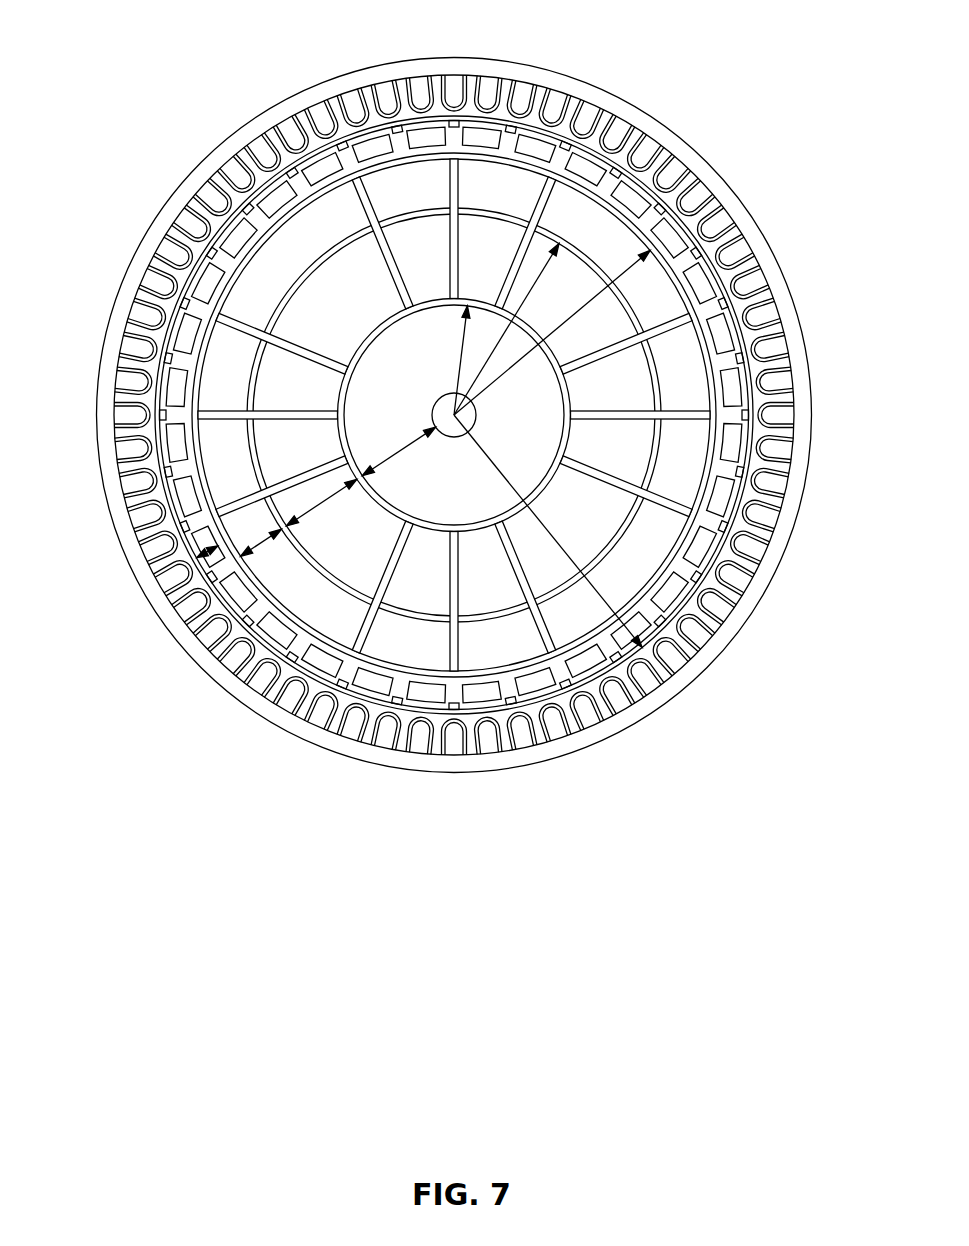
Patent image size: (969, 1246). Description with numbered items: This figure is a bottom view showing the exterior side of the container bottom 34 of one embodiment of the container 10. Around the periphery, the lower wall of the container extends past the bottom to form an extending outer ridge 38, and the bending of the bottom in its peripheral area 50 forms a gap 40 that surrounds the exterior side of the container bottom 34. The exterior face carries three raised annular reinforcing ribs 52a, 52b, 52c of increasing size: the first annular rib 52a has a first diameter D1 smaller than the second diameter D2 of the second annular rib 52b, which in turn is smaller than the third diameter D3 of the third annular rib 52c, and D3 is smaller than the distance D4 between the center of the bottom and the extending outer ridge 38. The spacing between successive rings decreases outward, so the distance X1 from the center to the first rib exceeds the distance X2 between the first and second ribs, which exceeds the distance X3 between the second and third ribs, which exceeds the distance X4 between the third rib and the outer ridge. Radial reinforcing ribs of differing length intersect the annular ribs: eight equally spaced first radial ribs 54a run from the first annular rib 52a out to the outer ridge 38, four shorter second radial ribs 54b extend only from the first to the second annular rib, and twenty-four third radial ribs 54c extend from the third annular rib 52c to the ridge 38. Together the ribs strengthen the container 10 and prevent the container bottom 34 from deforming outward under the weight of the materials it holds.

The container 10 is at (148, 70).
The container bottom 34 is at (634, 192).
The extending outer ridge 38 is at (132, 328).
The gap 40 is at (330, 672).
The peripheral area 50 is at (738, 438).
The first annular reinforcing rib 52a is at (525, 490).
The second annular reinforcing rib 52b is at (305, 741).
The third annular reinforcing rib 52c is at (185, 372).
The first radial reinforcing ribs 54a is at (684, 308).
The second radial reinforcing ribs 54b is at (460, 588).
The third radial reinforcing ribs 54c is at (731, 352).
The first diameter D1 is at (462, 340).
The second diameter D2 is at (538, 275).
The third diameter D3 is at (477, 390).
The distance between the extending outer ridge and the center D4 is at (598, 585).
The distance between the center and the first annular rib X1 is at (392, 456).
The distance between the first and second annular ribs X2 is at (317, 509).
The distance between the second and third annular ribs X3 is at (258, 547).
The distance between the third annular rib and the extending outer ridge X4 is at (218, 617).